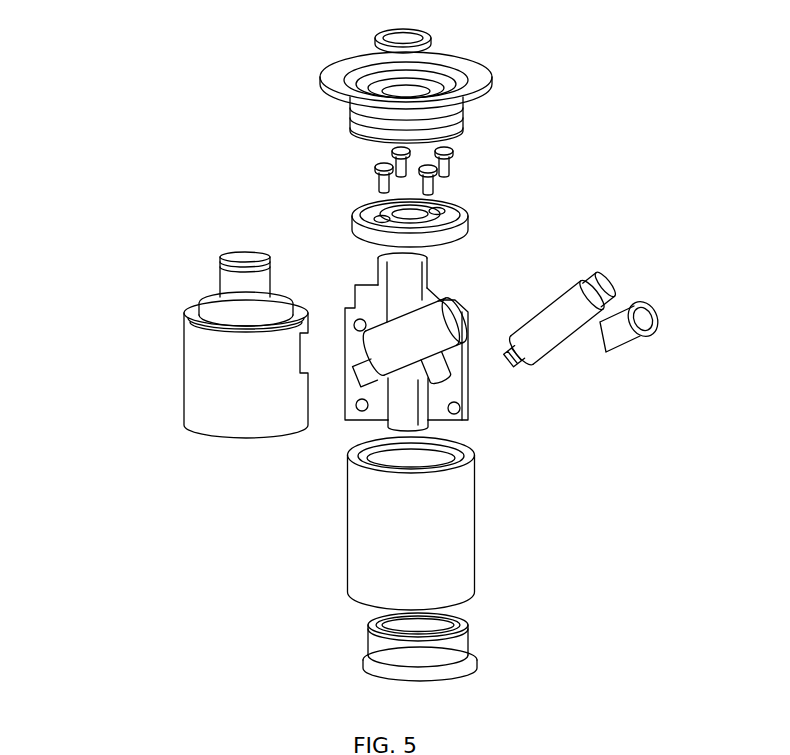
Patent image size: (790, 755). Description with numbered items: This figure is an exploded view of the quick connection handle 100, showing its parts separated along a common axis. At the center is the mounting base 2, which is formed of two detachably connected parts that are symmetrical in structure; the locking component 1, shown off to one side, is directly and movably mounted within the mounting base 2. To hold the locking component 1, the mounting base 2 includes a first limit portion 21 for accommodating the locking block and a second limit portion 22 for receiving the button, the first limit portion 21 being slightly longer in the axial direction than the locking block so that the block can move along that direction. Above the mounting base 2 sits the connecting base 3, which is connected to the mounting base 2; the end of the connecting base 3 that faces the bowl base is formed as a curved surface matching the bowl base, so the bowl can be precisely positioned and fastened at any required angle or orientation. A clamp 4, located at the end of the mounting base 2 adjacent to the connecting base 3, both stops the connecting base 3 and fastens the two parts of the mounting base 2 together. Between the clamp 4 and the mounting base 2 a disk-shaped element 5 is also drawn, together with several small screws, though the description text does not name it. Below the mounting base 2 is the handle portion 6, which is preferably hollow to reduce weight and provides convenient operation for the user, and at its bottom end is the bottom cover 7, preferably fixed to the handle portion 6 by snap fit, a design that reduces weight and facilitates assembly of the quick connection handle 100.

The quick connection handle 100 is at (230, 188).
The locking component 1 is at (612, 262).
The mounting base 2 is at (225, 412).
The first limit portion 21 is at (413, 397).
The second limit portion 22 is at (420, 323).
The connecting base 3 is at (490, 88).
The clamp 4 is at (432, 42).
The mounting plate 5 is at (460, 207).
The handle portion 6 is at (378, 522).
The bottom cover 7 is at (460, 645).